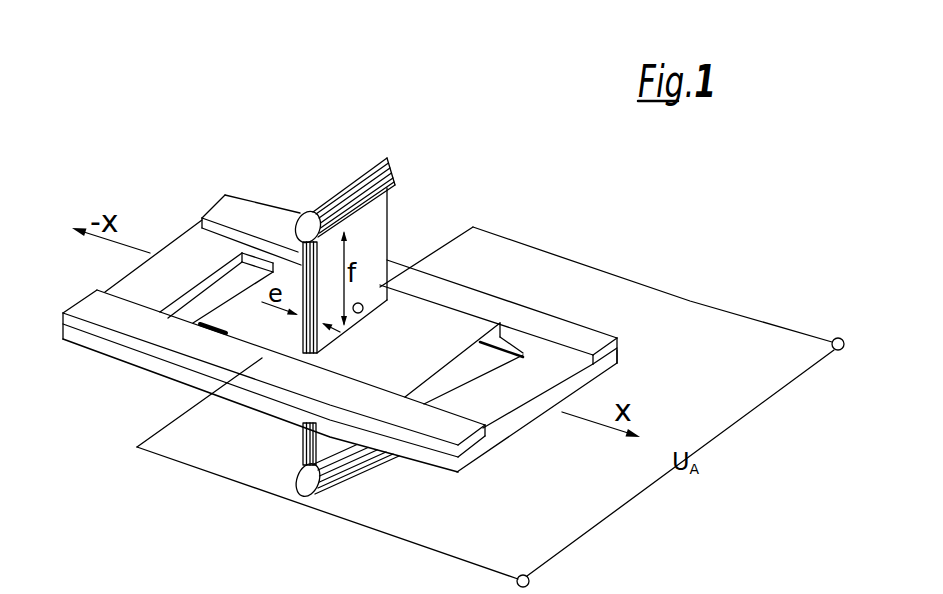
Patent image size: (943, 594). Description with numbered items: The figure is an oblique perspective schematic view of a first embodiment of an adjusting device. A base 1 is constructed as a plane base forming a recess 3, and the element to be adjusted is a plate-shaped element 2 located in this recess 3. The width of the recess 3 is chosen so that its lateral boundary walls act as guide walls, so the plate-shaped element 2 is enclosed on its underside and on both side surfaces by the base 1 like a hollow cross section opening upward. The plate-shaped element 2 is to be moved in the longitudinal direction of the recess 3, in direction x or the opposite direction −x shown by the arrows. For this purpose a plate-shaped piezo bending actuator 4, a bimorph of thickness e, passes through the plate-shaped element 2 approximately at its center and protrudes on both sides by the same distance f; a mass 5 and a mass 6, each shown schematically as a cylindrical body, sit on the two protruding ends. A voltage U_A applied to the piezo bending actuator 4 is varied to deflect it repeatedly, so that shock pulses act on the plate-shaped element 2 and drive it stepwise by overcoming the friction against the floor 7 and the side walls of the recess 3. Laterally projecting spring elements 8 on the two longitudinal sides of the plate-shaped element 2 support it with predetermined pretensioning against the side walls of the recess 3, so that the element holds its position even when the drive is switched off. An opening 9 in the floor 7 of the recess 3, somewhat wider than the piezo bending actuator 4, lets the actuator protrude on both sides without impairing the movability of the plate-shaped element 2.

The base 1 is at (117, 318).
The plate-shaped element 2 is at (442, 320).
The recess 3 is at (178, 232).
The piezo bending actuator 4 is at (368, 242).
The mass 5 is at (336, 183).
The mass 6 is at (307, 480).
The floor 7 is at (533, 394).
The spring elements 8 is at (157, 363).
The opening 9 is at (453, 392).